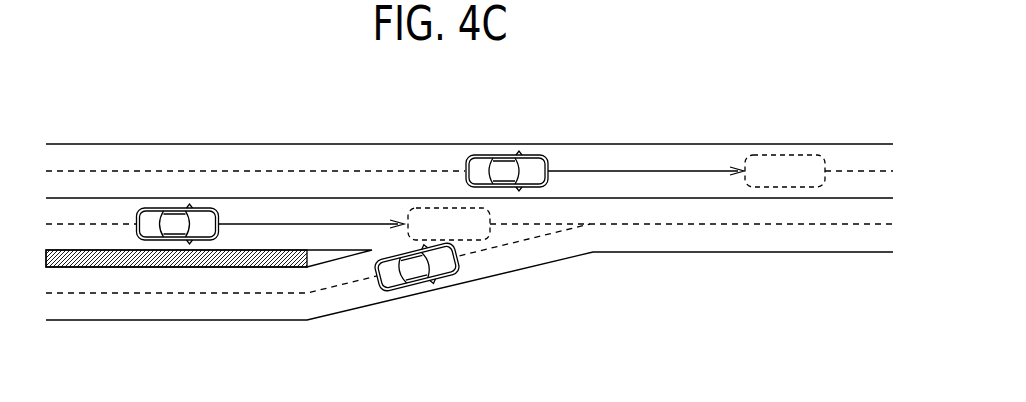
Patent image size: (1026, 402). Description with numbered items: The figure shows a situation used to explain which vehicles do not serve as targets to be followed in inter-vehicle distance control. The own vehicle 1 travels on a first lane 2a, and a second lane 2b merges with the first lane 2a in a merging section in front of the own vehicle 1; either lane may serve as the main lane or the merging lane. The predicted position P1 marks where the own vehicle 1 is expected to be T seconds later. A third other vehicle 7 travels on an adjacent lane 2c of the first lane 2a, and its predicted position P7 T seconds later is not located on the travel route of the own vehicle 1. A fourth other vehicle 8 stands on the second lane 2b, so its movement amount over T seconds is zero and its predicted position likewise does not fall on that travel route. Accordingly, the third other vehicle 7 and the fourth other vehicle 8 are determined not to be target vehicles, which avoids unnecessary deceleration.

The first lane 2a is at (69, 212).
The second lane 2b is at (85, 308).
The adjacent lane 2c is at (115, 157).
The own vehicle 1 is at (160, 208).
The third other vehicle 7 is at (517, 156).
The fourth other vehicle 8 is at (425, 288).
The predicted position of the own vehicle P1 is at (420, 208).
The predicted position of the third other vehicle P7 is at (766, 155).